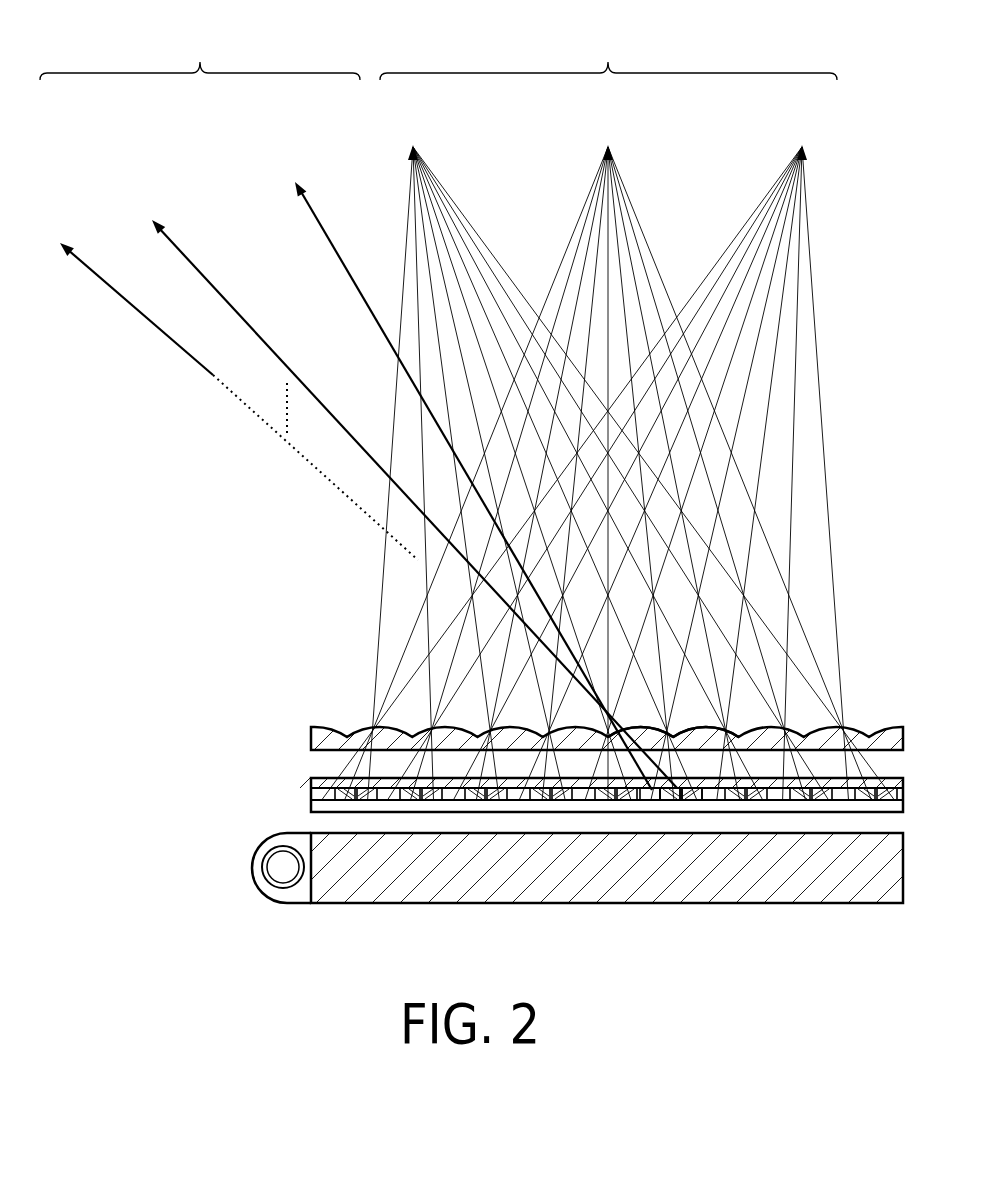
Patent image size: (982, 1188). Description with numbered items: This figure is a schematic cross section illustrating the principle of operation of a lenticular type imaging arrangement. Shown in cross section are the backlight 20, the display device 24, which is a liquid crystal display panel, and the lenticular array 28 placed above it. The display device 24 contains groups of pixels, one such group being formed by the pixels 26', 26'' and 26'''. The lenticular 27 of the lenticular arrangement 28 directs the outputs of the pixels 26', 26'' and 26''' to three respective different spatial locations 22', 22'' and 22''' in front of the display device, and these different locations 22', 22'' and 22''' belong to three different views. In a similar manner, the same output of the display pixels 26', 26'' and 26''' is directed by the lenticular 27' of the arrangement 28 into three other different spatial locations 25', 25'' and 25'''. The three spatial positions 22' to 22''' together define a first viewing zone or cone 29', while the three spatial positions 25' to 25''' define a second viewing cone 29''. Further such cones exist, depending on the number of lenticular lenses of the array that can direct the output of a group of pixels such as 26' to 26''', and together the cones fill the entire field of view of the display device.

The backlight 20 is at (232, 866).
The spatial location 22' is at (585, 456).
The spatial location 22'' is at (608, 456).
The spatial location 22''' is at (631, 456).
The display device 24 is at (232, 792).
The spatial location 25' is at (467, 451).
The spatial location 25'' is at (411, 450).
The spatial location 25''' is at (229, 336).
The pixel 26' is at (627, 870).
The pixel 26'' is at (676, 870).
The pixel 26''' is at (721, 870).
The lenticular 27 is at (782, 675).
The lenticular 27' is at (493, 659).
The lenticular array 28 is at (232, 744).
The first viewing cone 29' is at (608, 55).
The second viewing cone 29'' is at (200, 55).